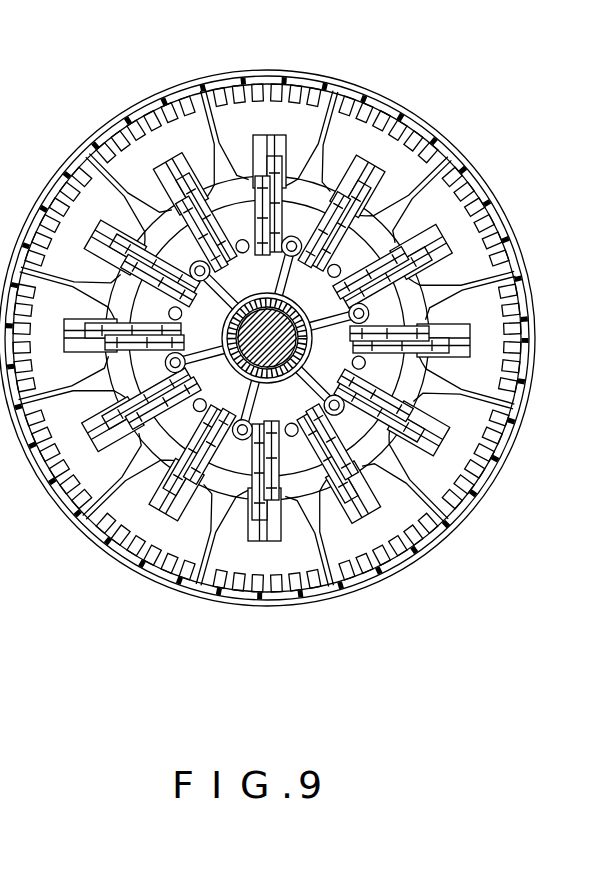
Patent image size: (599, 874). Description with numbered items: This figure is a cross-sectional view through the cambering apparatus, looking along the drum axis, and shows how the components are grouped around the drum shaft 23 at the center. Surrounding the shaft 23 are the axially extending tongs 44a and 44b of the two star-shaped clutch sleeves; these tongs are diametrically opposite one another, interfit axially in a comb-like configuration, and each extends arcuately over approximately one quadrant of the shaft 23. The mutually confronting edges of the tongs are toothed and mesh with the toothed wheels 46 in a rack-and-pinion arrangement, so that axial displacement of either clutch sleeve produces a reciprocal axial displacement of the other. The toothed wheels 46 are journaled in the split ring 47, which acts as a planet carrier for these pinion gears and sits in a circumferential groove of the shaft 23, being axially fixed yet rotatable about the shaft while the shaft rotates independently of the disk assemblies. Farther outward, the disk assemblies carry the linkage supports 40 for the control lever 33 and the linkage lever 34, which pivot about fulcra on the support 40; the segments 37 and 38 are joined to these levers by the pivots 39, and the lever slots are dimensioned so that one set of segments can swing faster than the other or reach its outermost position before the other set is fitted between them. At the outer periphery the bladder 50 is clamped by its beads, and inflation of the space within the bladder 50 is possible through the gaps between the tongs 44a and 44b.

The drum shaft 23 is at (253, 312).
The control lever 33 is at (362, 200).
The linkage lever 34 is at (314, 210).
The segment 37 is at (285, 110).
The segment 38 is at (410, 160).
The pivot 39 is at (362, 213).
The linkage support 40 is at (322, 246).
The axially extending tong 44a is at (296, 312).
The axially extending tong 44b is at (285, 392).
The toothed wheel 46 is at (258, 292).
The split ring 47 is at (308, 346).
The bladder 50 is at (110, 560).